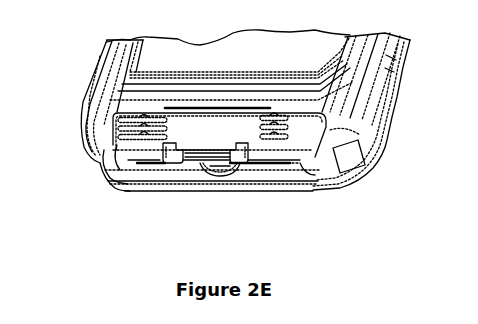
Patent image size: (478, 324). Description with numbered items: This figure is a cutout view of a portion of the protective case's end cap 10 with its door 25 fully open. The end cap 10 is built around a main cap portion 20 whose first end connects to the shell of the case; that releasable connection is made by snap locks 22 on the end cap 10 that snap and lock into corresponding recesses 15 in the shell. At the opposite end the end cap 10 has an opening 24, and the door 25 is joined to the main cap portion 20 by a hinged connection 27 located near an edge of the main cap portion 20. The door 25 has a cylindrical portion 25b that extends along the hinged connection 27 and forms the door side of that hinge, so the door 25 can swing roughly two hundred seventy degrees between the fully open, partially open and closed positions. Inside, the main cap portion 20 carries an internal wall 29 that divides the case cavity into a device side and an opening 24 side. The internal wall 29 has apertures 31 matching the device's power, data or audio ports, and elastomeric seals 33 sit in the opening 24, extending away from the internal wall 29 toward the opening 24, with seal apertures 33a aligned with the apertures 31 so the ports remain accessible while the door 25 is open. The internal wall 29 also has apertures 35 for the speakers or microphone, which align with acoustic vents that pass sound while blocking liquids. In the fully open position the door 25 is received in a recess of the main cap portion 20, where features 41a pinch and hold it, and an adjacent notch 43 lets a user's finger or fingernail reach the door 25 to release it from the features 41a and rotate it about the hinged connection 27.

The end cap 10 is at (357, 190).
The recesses 15 is at (390, 58).
The main cap portion 20 is at (87, 128).
The snap locks 22 is at (95, 72).
The opening 24 is at (288, 183).
The door 25 is at (117, 147).
The cylindrical portion 25b is at (125, 158).
The hinged connection 27 is at (192, 155).
The internal wall 29 is at (152, 168).
The apertures 31 is at (234, 172).
The elastomeric seals 33 is at (213, 175).
The seal apertures 33a is at (222, 172).
The apertures 35 is at (140, 167).
The features 41a is at (110, 127).
The notch 43 is at (180, 108).